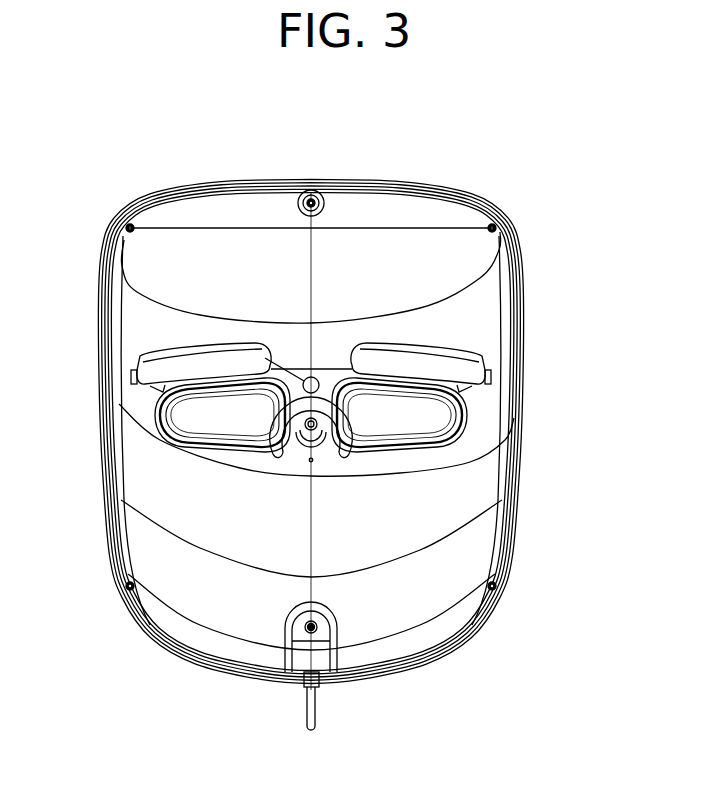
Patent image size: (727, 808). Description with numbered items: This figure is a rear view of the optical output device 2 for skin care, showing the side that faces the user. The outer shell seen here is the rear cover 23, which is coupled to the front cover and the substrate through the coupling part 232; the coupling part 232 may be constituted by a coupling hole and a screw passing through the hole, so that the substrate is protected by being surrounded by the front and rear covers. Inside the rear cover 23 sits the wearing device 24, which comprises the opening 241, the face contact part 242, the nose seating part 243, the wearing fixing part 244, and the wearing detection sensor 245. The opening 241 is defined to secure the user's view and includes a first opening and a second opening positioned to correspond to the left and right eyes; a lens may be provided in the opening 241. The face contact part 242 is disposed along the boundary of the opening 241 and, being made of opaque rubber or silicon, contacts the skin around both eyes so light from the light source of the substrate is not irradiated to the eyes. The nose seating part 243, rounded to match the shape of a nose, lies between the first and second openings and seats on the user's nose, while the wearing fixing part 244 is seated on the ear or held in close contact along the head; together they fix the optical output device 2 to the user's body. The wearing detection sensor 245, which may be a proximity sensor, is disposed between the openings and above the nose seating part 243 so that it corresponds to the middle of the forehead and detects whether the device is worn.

The optical output device 2 is at (466, 160).
The rear cover 23 is at (480, 258).
The coupling part 232 is at (316, 197).
The wearing device 24 is at (310, 510).
The opening 241 is at (430, 432).
The face contact part 242 is at (366, 419).
The nose seating part 243 is at (357, 450).
The wearing fixing part 244 is at (148, 370).
The wearing detection sensor 245 is at (205, 345).